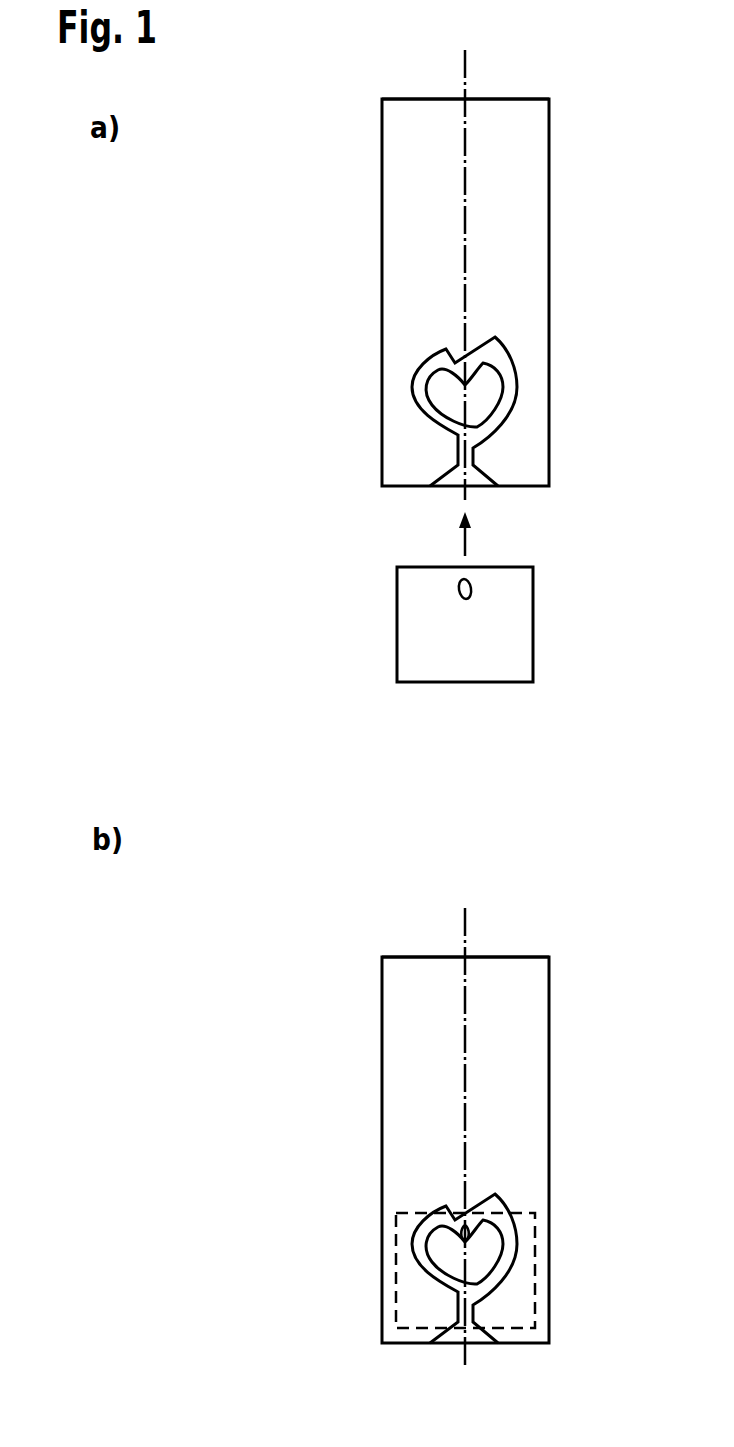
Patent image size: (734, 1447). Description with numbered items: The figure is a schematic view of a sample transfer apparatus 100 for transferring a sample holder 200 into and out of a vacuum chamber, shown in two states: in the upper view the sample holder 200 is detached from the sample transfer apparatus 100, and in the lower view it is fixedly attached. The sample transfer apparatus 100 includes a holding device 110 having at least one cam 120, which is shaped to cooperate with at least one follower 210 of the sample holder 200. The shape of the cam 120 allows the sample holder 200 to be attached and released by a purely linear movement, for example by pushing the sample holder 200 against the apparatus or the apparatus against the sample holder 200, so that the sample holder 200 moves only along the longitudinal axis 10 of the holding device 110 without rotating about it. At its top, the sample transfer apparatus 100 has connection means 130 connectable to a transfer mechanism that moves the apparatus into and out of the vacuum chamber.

The longitudinal axis 10 is at (465, 52).
The sample transfer apparatus 100 is at (412, 673).
The holding device 110 is at (382, 193).
The cam 120 is at (410, 427).
The connection means 130 is at (399, 99).
The sample holder 200 is at (397, 626).
The follower 210 is at (471, 587).